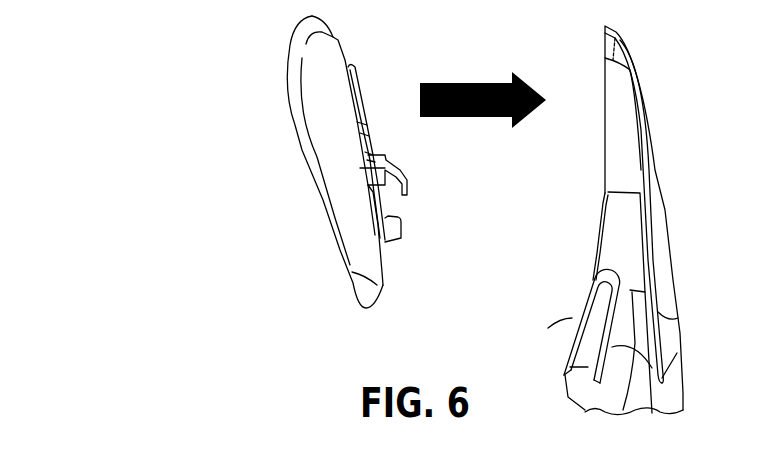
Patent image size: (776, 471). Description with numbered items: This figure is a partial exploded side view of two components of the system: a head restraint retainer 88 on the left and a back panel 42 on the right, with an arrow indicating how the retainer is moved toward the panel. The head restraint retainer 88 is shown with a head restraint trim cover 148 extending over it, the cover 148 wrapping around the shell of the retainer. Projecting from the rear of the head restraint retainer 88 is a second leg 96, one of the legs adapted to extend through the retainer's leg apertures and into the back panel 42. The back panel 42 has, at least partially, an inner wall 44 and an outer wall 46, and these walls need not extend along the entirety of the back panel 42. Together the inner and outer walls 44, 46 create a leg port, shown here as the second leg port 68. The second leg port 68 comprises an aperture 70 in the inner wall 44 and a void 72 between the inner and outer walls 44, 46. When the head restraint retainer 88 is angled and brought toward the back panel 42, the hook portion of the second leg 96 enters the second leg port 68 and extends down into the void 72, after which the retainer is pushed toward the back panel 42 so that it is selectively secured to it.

The head restraint trim cover 148 is at (328, 209).
The head restraint retainer 88 is at (358, 73).
The second leg 96 is at (404, 174).
The back panel 42 is at (653, 137).
The aperture 70 is at (603, 220).
The second leg port 68 is at (598, 258).
The void 72 is at (640, 250).
The outer wall 46 is at (677, 293).
The inner wall 44 is at (580, 318).